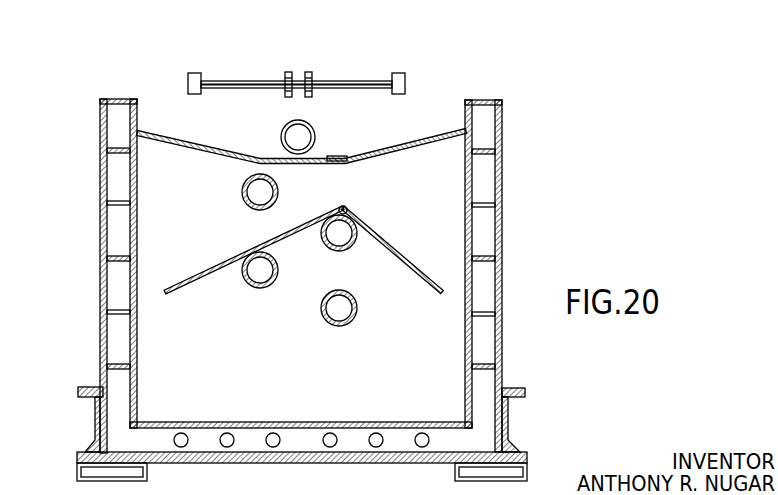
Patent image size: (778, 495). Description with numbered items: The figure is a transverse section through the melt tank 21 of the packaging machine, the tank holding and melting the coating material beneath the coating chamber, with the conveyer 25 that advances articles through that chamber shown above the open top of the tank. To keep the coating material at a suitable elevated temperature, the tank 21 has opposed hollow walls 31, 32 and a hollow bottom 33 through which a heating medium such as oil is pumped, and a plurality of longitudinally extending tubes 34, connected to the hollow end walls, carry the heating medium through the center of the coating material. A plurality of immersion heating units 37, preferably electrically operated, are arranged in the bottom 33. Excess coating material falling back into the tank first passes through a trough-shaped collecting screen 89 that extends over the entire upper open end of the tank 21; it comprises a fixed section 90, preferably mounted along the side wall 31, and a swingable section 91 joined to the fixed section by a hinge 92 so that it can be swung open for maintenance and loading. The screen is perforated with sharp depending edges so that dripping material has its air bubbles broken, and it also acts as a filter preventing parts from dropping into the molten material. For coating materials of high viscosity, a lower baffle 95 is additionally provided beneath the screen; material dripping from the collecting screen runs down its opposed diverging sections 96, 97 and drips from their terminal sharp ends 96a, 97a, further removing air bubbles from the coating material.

The melt tank 21 is at (307, 297).
The conveyer 25 is at (406, 68).
The hollow wall 31 is at (122, 227).
The hollow wall 32 is at (492, 238).
The hollow bottom 33 is at (397, 442).
The longitudinally extending tubes 34 is at (278, 352).
The immersion heating units 37 is at (273, 447).
The collecting screen 89 is at (301, 122).
The fixed section 90 is at (208, 150).
The swingable section 91 is at (379, 149).
The hinge 92 is at (338, 157).
The lower baffle 95 is at (305, 266).
The diverging section 96 is at (228, 256).
The diverging section 97 is at (398, 250).
The terminal sharp end 96a is at (165, 295).
The terminal sharp end 97a is at (442, 295).